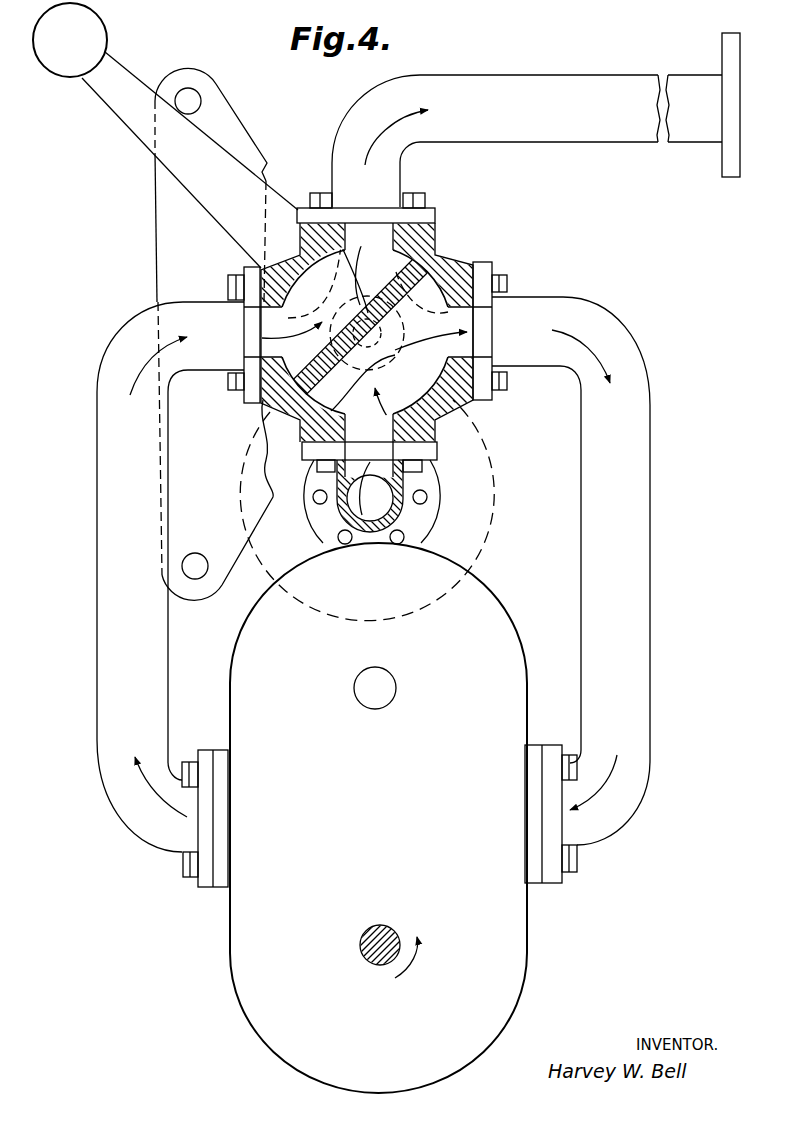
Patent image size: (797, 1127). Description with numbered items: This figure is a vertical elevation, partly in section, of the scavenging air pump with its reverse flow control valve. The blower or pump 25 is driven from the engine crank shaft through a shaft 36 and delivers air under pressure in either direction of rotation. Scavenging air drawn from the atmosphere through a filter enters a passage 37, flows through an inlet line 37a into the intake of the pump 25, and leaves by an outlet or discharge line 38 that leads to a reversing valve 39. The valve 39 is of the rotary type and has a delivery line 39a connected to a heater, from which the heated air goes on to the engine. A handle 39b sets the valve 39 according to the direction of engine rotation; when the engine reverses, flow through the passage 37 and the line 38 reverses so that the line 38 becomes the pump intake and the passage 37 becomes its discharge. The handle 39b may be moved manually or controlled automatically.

The pump 25 is at (226, 983).
The shaft 36 is at (380, 930).
The passage 37 is at (384, 507).
The inlet line 37a is at (642, 603).
The discharge line 38 is at (102, 563).
The reversing valve 39 is at (415, 272).
The delivery line 39a is at (530, 78).
The handle 39b is at (107, 98).